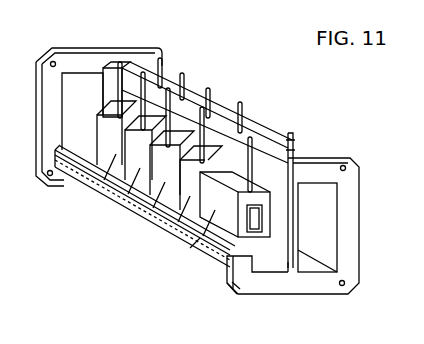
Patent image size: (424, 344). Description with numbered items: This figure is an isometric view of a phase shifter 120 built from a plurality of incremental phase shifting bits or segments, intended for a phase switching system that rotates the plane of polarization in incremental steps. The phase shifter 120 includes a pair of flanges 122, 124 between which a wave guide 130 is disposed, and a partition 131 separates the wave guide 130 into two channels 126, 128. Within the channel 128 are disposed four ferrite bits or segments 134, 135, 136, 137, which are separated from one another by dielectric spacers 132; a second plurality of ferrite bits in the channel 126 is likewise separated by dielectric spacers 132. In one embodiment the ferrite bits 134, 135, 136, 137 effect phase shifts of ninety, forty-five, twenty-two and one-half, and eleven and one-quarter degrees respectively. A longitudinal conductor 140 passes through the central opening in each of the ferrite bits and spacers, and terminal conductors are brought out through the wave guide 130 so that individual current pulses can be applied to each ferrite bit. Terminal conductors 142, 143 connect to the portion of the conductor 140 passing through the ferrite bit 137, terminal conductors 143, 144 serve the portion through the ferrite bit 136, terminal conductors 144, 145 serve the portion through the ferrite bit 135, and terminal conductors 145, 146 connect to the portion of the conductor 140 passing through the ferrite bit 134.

The phase shifter 120 is at (86, 283).
The flange 122 is at (325, 168).
The flange 124 is at (93, 58).
The channel 126 is at (322, 214).
The channel 128 is at (263, 262).
The wave guide 130 is at (252, 128).
The partition 131 is at (290, 270).
The dielectric spacers 132 is at (107, 192).
The ferrite bit 134 is at (197, 250).
The ferrite bit 135 is at (173, 209).
The ferrite bit 136 is at (137, 185).
The ferrite bit 137 is at (87, 189).
The longitudinal conductor 140 is at (235, 235).
The terminal conductor 142 is at (122, 67).
The terminal conductor 143 is at (182, 73).
The terminal conductor 144 is at (208, 90).
The terminal conductor 145 is at (241, 107).
The terminal conductor 146 is at (292, 136).